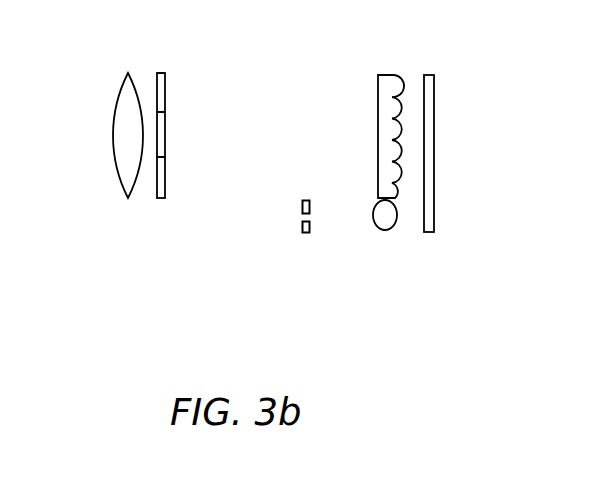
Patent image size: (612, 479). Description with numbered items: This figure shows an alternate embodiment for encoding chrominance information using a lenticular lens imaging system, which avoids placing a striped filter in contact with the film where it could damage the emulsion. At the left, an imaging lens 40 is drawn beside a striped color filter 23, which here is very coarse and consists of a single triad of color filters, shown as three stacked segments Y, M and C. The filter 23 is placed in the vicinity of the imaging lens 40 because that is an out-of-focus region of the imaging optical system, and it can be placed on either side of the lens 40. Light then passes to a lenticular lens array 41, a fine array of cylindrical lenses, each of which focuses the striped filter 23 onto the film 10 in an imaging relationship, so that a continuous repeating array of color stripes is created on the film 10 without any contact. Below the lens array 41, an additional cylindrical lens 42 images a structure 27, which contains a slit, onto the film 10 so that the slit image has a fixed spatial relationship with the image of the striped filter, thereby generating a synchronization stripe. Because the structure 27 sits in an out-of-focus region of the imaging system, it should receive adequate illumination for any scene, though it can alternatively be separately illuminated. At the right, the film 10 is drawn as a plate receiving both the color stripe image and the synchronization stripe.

The imaging lens 40 is at (123, 82).
The striped color filter 23 is at (158, 198).
The yellow filter segment Y is at (167, 91).
The magenta filter segment M is at (167, 135).
The cyan filter segment C is at (167, 178).
The structure containing a slit 27 is at (302, 232).
The lenticular lens array 41 is at (387, 70).
The additional cylindrical lens 42 is at (382, 236).
The film 10 is at (435, 218).